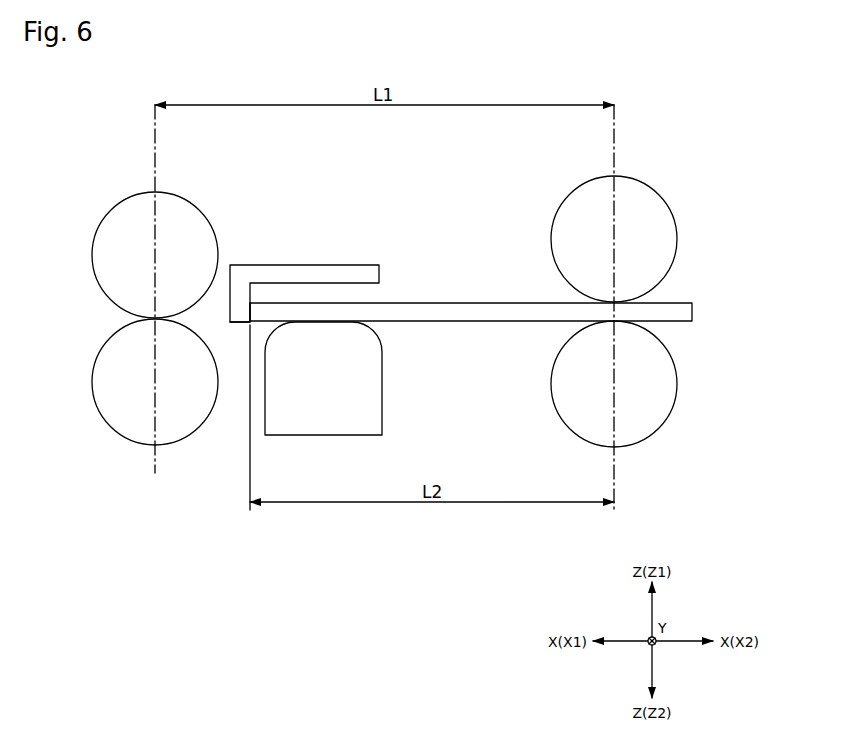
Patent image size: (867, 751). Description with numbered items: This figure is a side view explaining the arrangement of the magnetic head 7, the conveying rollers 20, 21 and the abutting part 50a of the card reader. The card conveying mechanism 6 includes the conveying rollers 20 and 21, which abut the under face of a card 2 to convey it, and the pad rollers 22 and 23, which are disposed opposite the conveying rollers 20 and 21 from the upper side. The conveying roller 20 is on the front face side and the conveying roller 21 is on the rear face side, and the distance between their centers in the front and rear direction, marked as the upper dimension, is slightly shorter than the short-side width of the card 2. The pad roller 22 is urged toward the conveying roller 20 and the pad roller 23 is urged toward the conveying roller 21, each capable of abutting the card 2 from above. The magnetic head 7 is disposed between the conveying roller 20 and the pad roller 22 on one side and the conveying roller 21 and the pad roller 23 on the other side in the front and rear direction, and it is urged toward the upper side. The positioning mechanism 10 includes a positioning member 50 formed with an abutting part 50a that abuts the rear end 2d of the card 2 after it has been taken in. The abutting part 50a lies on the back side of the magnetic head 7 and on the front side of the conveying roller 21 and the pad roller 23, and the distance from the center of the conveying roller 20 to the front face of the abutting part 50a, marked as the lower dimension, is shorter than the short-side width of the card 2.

The card 2 is at (470, 302).
The sheet end portion 2d is at (249, 301).
The card conveying mechanism 6 is at (697, 152).
The magnetic head 7 is at (382, 390).
The positioning mechanism 10 is at (399, 210).
The conveying roller 20 is at (678, 384).
The conveying roller 21 is at (92, 383).
The pad roller 22 is at (678, 239).
The pad roller 23 is at (92, 255).
The positioning member 50 is at (331, 265).
The abutting part 50a is at (238, 323).